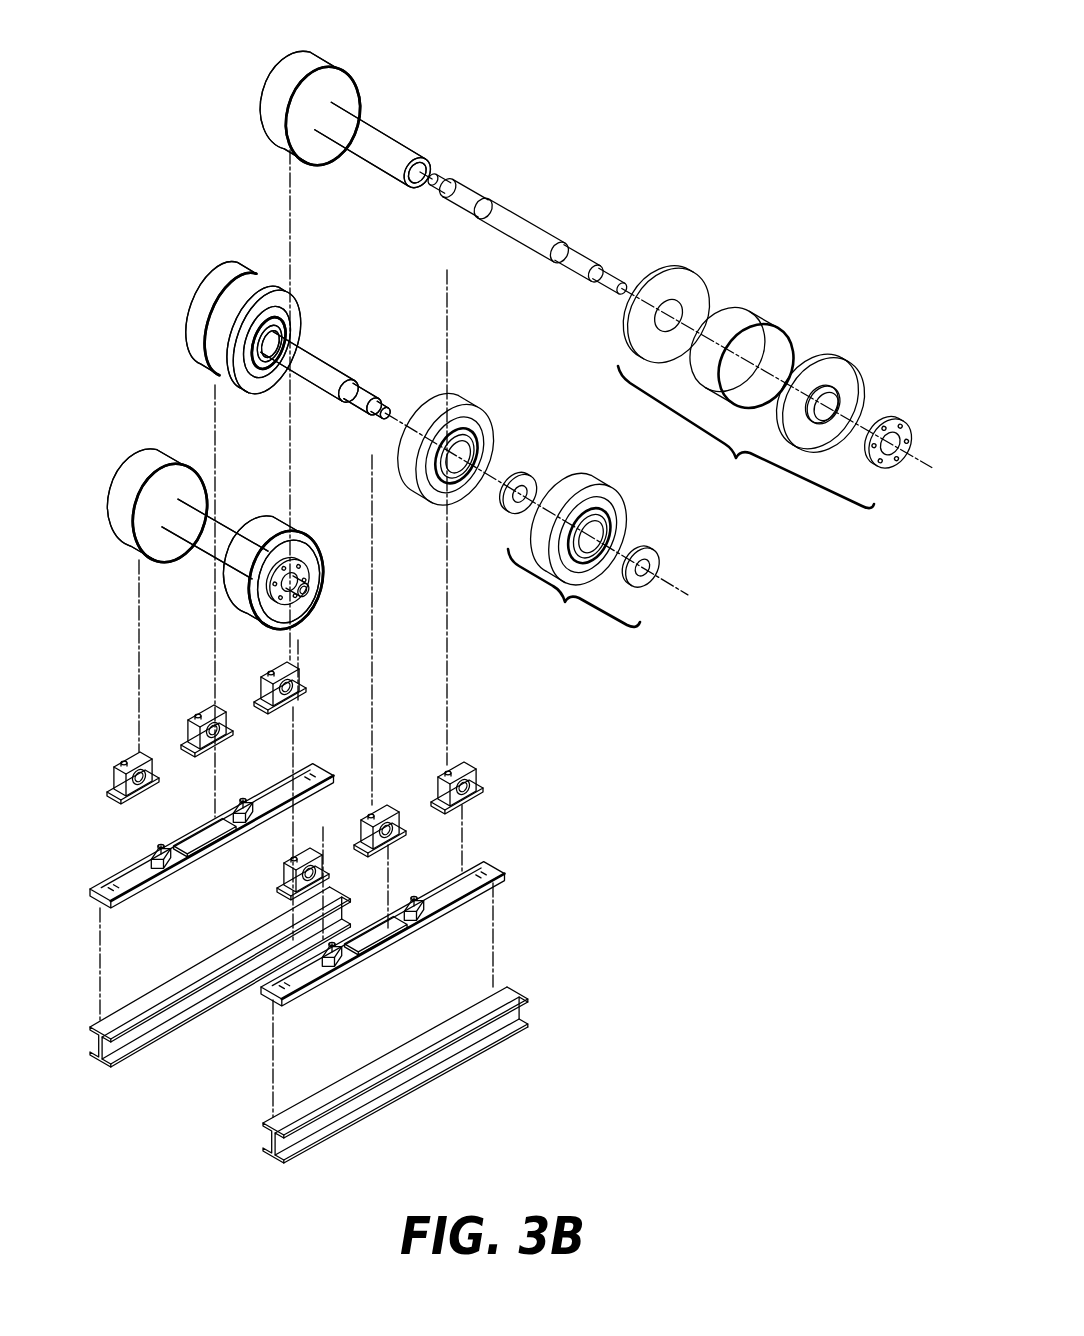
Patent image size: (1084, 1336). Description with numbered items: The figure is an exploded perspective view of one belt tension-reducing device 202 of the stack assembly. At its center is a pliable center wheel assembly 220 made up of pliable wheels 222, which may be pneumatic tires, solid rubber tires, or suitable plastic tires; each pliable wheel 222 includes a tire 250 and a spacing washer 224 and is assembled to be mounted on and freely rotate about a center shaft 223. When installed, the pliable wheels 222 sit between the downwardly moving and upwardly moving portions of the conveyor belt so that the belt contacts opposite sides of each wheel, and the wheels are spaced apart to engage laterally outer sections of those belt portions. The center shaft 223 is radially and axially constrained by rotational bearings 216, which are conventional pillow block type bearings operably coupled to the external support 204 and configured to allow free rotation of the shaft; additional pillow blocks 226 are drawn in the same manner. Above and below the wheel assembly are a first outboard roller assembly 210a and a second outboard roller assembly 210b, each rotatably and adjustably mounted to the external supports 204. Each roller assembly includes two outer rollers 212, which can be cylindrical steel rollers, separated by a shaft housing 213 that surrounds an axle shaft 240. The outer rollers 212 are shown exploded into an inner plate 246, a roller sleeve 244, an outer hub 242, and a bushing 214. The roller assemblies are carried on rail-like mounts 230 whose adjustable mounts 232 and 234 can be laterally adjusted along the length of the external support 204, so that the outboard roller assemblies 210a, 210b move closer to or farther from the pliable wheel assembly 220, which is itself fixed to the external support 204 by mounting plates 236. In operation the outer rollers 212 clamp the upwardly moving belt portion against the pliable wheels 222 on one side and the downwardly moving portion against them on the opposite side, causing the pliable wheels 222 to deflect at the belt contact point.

The belt tension-reducing device 202 is at (694, 140).
The external support 204 is at (160, 992).
The first outboard roller assembly 210a is at (120, 480).
The second outboard roller assembly 210b is at (262, 78).
The outer roller 212 is at (326, 62).
The shaft housing 213 is at (380, 137).
The bushing 214 is at (908, 426).
The rotational bearing 216 is at (270, 673).
The pliable center wheel assembly 220 is at (190, 303).
The pliable wheel 222 is at (236, 277).
The center shaft 223 is at (314, 362).
The spacing washer 224 is at (529, 479).
The bearing block 226 is at (192, 720).
The mounting rail 230 is at (322, 873).
The adjustable mount 232 is at (283, 789).
The adjustable mount 234 is at (246, 800).
The mounting plate 236 is at (206, 831).
The axle shaft 240 is at (532, 226).
The outer hub 242 is at (858, 376).
The roller sleeve 244 is at (762, 312).
The inner plate 246 is at (692, 276).
The tire 250 is at (462, 402).